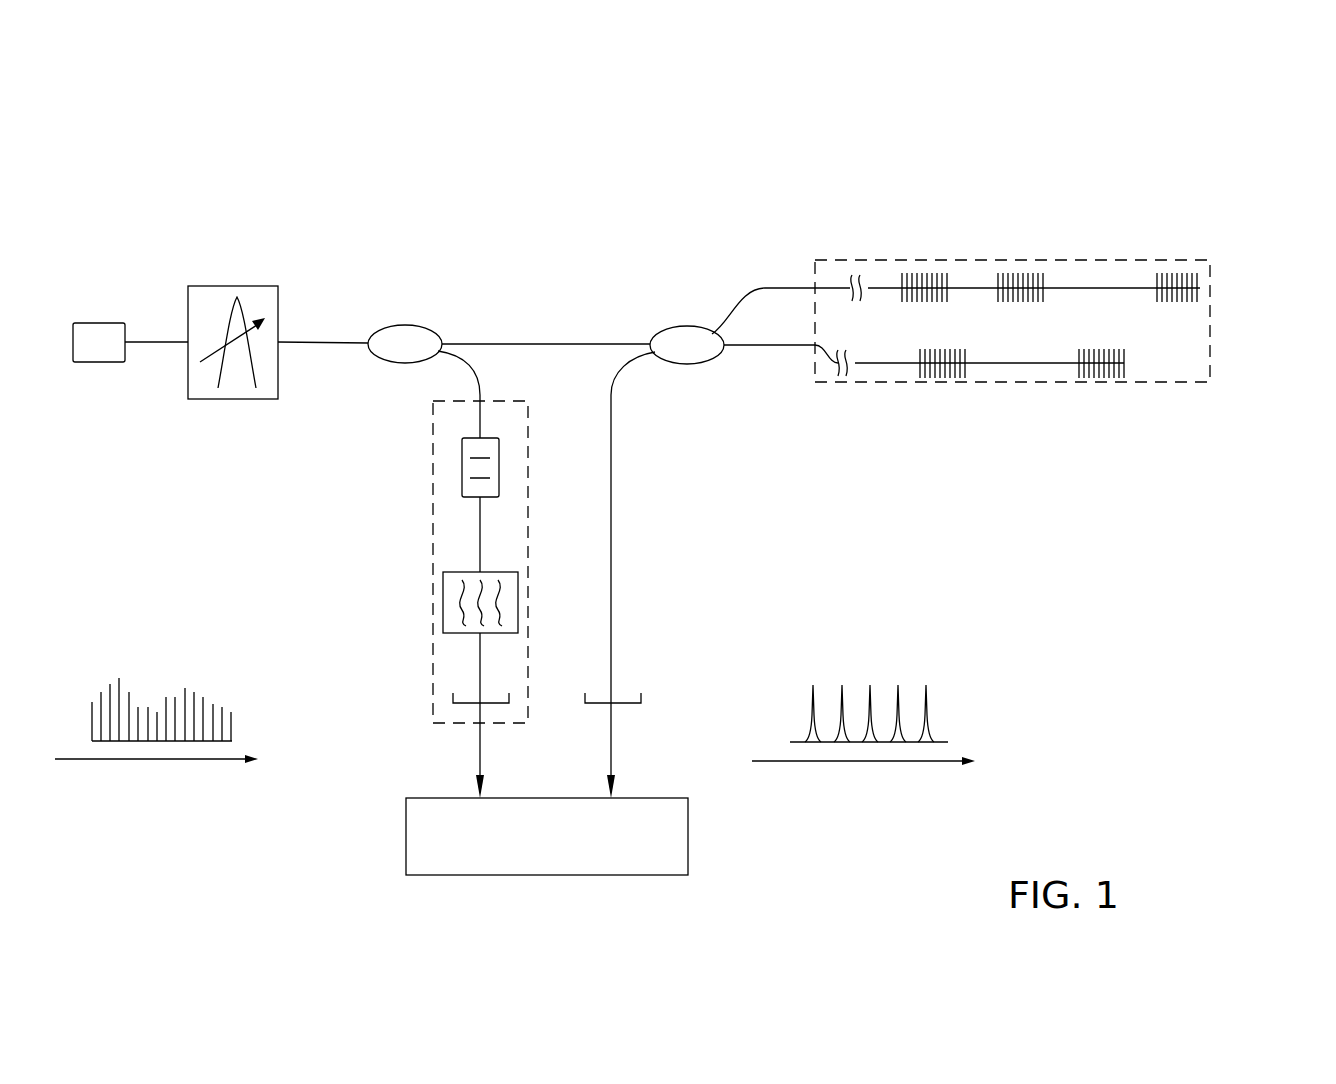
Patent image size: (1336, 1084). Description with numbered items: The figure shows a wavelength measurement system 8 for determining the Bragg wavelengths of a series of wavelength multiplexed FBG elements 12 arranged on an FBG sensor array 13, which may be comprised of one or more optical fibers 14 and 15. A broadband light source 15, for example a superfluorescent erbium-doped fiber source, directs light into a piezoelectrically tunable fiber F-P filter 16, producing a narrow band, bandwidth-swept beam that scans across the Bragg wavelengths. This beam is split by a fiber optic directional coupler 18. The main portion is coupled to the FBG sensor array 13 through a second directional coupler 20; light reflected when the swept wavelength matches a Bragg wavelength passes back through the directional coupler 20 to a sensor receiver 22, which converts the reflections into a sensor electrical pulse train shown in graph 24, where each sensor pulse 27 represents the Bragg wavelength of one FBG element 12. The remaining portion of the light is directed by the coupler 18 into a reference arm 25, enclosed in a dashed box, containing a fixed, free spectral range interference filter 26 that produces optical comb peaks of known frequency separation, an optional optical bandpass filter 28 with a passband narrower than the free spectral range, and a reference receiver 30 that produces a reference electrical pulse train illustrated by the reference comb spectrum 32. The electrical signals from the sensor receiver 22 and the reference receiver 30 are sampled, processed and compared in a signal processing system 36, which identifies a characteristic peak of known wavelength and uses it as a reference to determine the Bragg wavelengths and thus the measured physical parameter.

The wavelength measurement system 8 is at (450, 162).
The FBG elements 12 is at (998, 286).
The FBG sensor array 13 is at (1212, 292).
The optical fiber 14 is at (785, 288).
The broadband light source 15 is at (97, 323).
The piezoelectrically tunable fiber F-P filter 16 is at (232, 286).
The fiber optic directional coupler 18 is at (405, 325).
The second directional coupler 20 is at (660, 327).
The sensor receiver 22 is at (641, 695).
The graph 24 is at (935, 628).
The reference arm 25 is at (433, 433).
The fixed, free spectral range interference filter 26 is at (462, 466).
The sensor pulse 27 is at (815, 698).
The optical bandpass filter 28 is at (443, 597).
The reference receiver 30 is at (453, 695).
The reference comb spectrum 32 is at (195, 655).
The signal processing system 36 is at (406, 835).